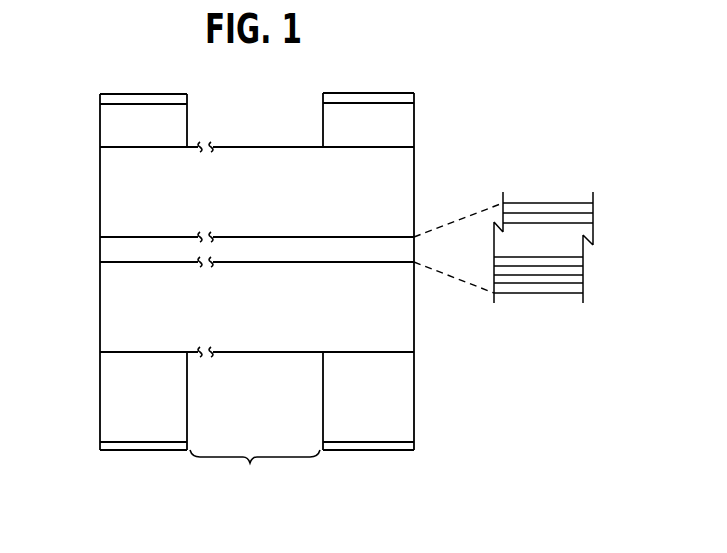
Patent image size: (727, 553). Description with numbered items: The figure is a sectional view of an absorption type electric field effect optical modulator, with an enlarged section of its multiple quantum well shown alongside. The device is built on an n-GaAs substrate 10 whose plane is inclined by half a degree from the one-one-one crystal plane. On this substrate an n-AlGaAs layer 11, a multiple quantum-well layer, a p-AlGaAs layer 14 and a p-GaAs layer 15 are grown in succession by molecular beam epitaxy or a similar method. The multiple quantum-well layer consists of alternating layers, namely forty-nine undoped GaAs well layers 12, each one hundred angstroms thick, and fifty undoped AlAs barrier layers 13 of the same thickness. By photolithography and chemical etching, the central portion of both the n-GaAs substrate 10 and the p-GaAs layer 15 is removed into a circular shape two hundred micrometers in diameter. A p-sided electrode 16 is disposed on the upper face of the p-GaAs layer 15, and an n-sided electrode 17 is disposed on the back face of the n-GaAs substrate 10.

The n-GaAs substrate 10 is at (400, 384).
The n-AlGaAs layer 11 is at (405, 326).
The undoped GaAs well layers 12 is at (593, 220).
The undoped AlAs barrier layers 13 is at (592, 211).
The p-AlGaAs layer 14 is at (400, 208).
The p-GaAs layer 15 is at (407, 128).
The p-sided electrode 16 is at (406, 100).
The n-sided electrode 17 is at (405, 446).